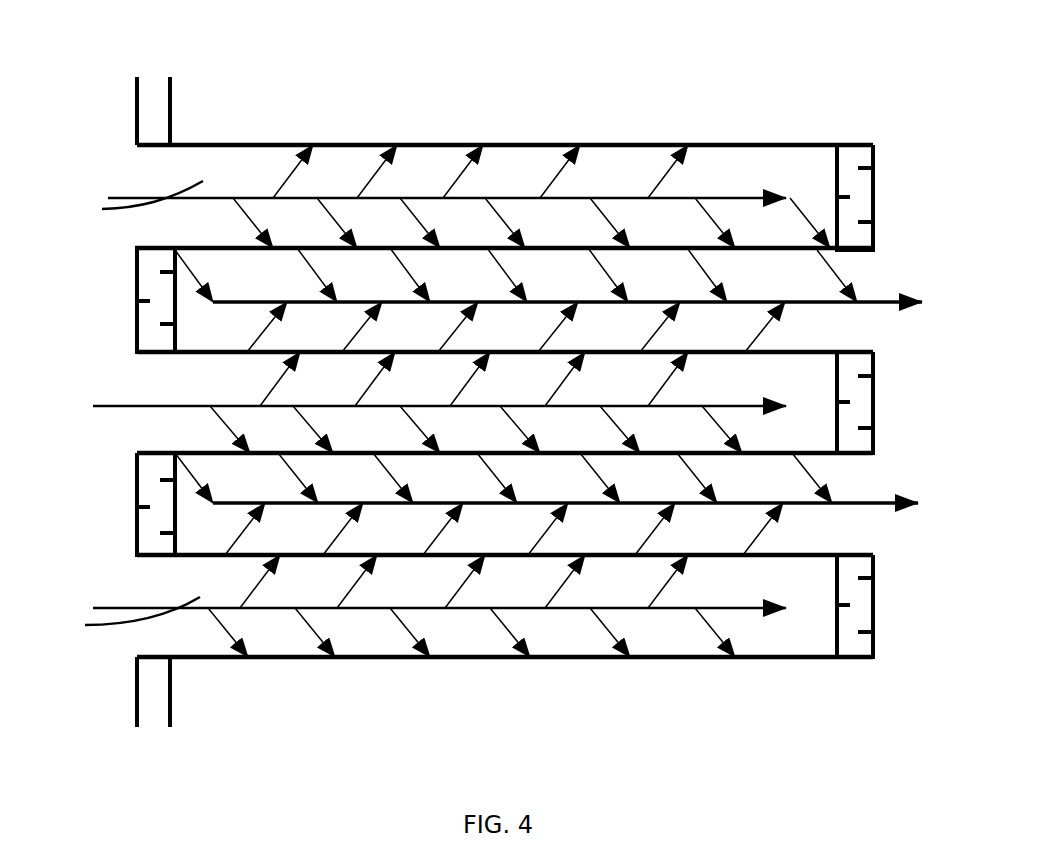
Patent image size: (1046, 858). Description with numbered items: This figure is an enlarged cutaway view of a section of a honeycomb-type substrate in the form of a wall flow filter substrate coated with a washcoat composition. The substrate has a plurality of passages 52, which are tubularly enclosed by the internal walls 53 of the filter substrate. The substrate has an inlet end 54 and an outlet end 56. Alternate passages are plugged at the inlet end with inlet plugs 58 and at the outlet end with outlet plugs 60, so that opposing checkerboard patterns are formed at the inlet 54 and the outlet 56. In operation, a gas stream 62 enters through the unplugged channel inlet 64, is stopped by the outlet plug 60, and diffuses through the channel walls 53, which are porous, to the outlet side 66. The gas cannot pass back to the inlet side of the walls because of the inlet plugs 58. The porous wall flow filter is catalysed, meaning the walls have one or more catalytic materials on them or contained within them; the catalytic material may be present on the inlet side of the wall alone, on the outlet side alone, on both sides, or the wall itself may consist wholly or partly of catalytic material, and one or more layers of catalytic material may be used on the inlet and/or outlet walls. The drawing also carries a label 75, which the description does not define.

The passages 52 is at (187, 247).
The internal walls 53 is at (448, 235).
The inlet end 54 is at (124, 66).
The outlet end 56 is at (888, 150).
The inlet plugs 58 is at (132, 130).
The outlet plugs 60 is at (877, 213).
The gas stream 62 is at (222, 197).
The unplugged channel inlet 64 is at (160, 155).
The outlet side 66 is at (872, 343).
The cross-flow arrows 75 is at (457, 655).